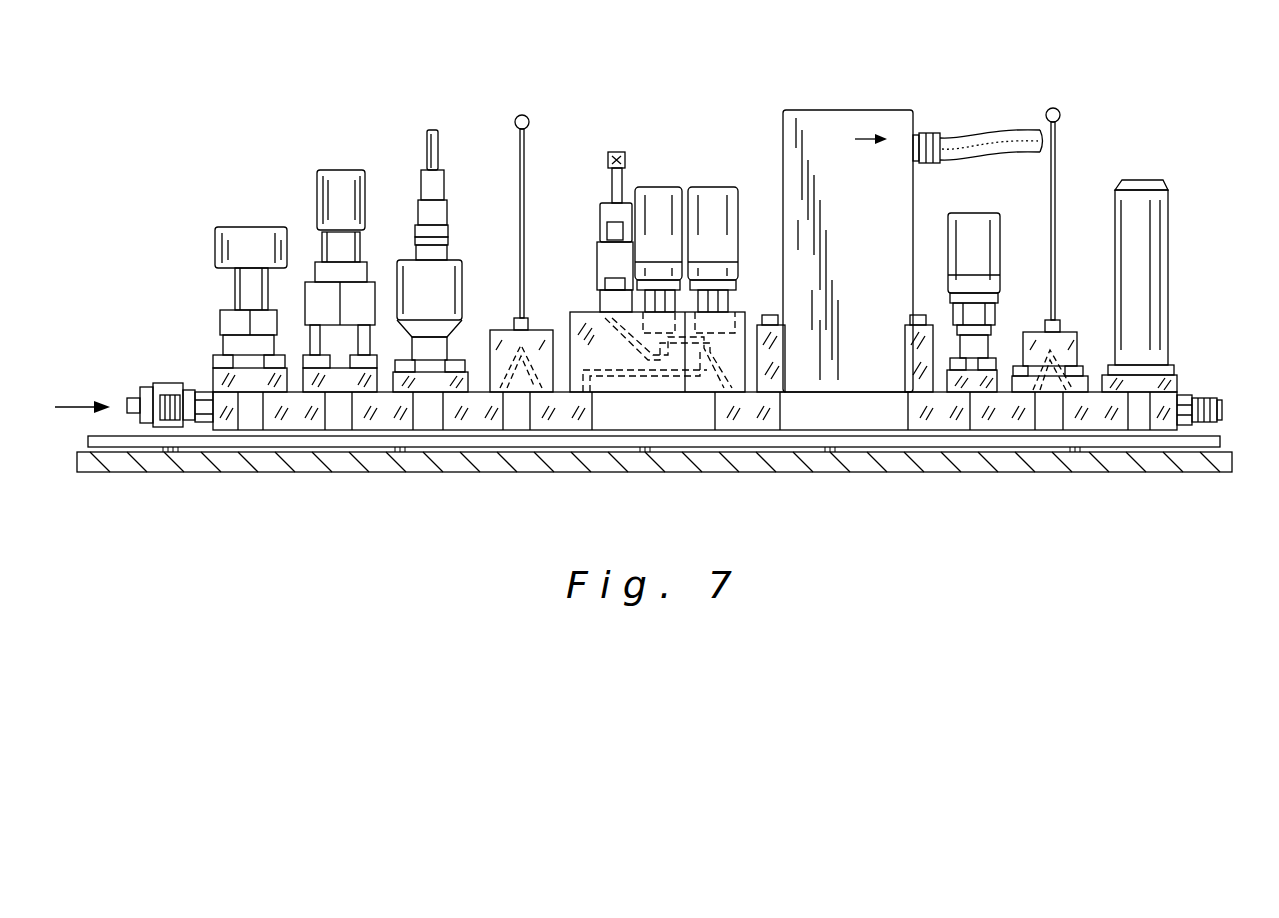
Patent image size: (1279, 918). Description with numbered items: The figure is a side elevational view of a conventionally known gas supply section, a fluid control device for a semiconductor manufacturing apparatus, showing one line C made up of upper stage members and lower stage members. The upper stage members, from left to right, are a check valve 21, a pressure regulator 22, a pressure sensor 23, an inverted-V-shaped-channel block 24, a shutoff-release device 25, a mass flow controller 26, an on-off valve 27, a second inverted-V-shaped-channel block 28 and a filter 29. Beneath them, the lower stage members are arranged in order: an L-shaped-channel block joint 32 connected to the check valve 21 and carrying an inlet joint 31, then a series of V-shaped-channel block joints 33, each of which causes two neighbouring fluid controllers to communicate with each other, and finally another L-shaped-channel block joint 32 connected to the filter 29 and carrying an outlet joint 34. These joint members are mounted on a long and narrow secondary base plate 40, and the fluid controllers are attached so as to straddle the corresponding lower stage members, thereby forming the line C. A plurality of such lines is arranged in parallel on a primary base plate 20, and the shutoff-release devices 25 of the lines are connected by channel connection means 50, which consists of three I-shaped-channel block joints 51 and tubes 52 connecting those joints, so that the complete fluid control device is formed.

The primary base plate 20 is at (1216, 462).
The check valve 21 is at (226, 255).
The pressure regulator 22 is at (320, 172).
The pressure sensor 23 is at (453, 264).
The inverted-V-shaped-channel block 24 is at (498, 328).
The shutoff-release device 25 is at (585, 315).
The mass flow controller 26 is at (832, 118).
The on-off valve 27 is at (992, 240).
The inverted-V-shaped-channel block 28 is at (1063, 333).
The filter 29 is at (1157, 288).
The inlet joint 31 is at (155, 425).
The L-shaped-channel block joint 32 is at (230, 422).
The V-shaped-channel block joint 33 is at (300, 422).
The outlet joint 34 is at (1095, 422).
The secondary base plate 40 is at (1220, 445).
The channel connection means 50 is at (588, 196).
The I-shaped-channel block joint 51 is at (600, 263).
The tube 52 is at (608, 200).
The line C is at (1130, 132).